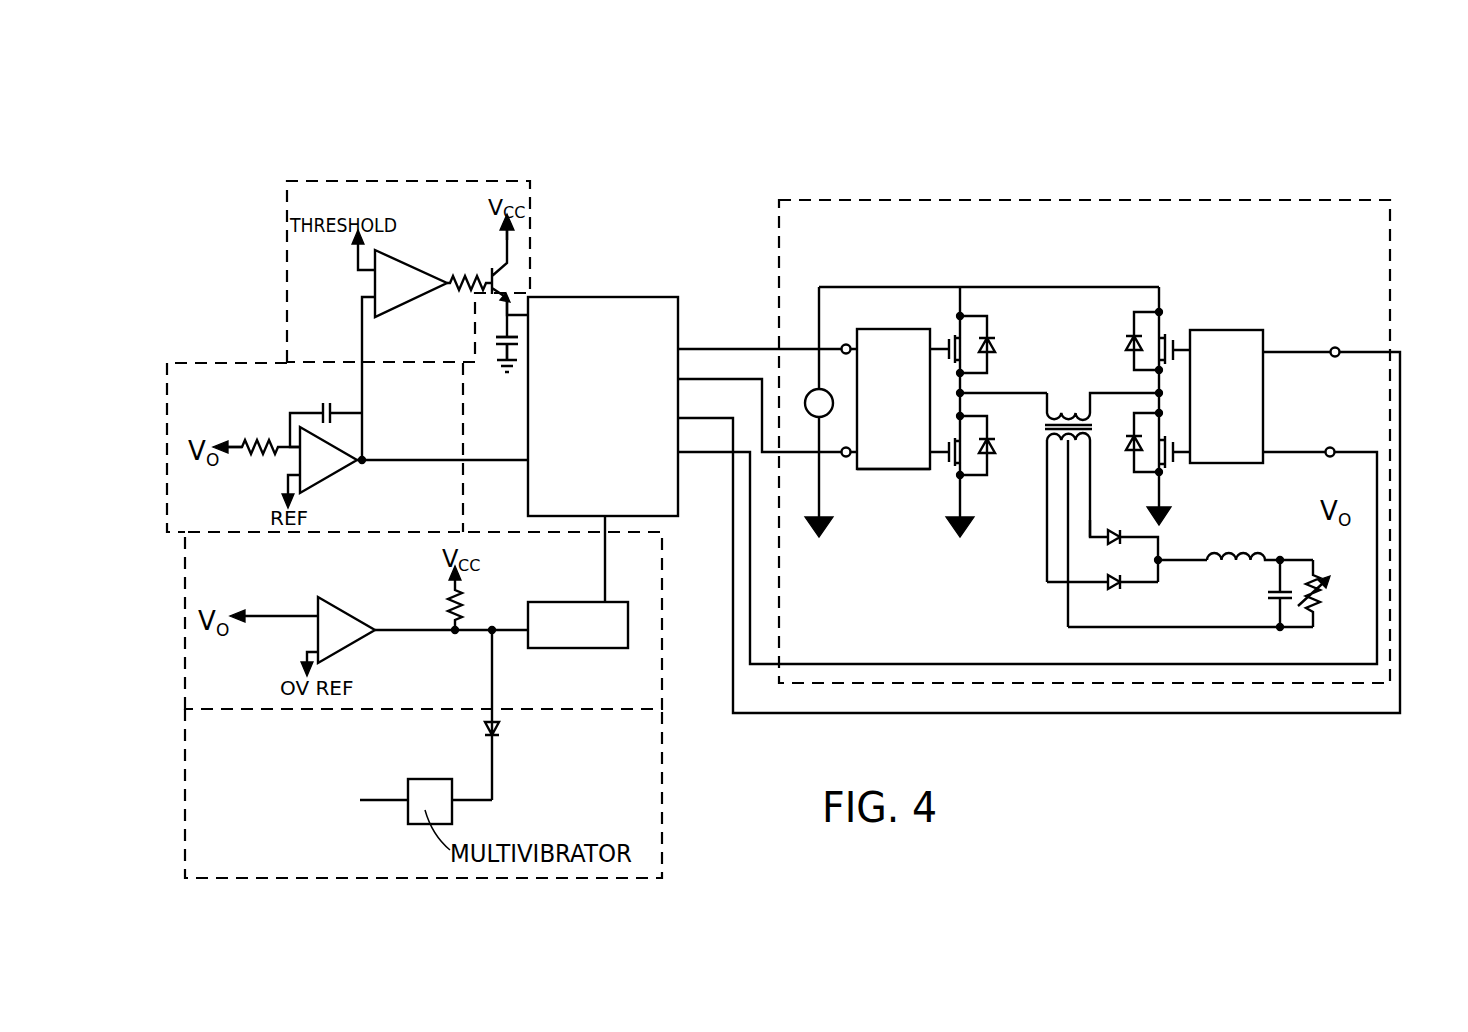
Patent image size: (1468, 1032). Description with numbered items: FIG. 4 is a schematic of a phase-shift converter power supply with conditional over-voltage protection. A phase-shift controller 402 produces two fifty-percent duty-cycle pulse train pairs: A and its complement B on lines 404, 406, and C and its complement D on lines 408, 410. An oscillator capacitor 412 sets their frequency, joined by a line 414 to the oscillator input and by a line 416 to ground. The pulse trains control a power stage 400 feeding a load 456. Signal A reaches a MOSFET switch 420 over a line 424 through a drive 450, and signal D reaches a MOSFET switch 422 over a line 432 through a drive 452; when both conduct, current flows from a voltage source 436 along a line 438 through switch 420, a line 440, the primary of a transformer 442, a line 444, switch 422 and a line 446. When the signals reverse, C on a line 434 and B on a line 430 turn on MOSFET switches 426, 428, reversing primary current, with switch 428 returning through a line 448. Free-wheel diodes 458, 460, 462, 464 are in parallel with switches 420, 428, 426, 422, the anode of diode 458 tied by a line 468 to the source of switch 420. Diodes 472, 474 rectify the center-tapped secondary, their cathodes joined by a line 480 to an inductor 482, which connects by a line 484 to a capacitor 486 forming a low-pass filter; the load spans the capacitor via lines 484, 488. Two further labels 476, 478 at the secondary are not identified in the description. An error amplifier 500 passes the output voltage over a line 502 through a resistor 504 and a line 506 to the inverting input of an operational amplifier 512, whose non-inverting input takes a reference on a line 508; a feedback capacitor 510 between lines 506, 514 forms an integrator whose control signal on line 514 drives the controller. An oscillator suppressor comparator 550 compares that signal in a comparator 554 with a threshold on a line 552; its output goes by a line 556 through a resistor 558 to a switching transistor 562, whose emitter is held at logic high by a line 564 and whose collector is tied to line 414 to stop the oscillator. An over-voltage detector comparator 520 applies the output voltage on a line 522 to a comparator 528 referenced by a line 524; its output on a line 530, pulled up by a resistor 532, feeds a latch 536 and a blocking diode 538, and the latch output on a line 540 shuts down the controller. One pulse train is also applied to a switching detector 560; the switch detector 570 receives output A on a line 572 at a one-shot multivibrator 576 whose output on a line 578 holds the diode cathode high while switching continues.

The power stage 400 is at (1400, 305).
The phase-shift controller 402 is at (612, 297).
The line 404 is at (767, 335).
The line 406 is at (767, 402).
The line 408 is at (1039, 532).
The line 410 is at (1027, 545).
The oscillator capacitor 412 is at (497, 337).
The line 414 is at (520, 345).
The line 416 is at (500, 366).
The MOSFET switch 420 is at (942, 345).
The MOSFET switch 422 is at (1164, 464).
The line 424 is at (846, 344).
The MOSFET switch 426 is at (1172, 340).
The MOSFET switch 428 is at (953, 464).
The line 430 is at (847, 458).
The line 432 is at (1330, 446).
The line 434 is at (1334, 346).
The voltage source 436 is at (808, 394).
The line 438 is at (888, 287).
The line 440 is at (1010, 395).
The transformer 442 is at (1068, 413).
The line 444 is at (1110, 418).
The line 446 is at (1163, 518).
The line 448 is at (954, 522).
The drive 450 is at (878, 470).
The drive 452 is at (1232, 330).
The load 456 is at (1340, 566).
The free-wheel diode 458 is at (990, 342).
The free-wheel diode 460 is at (988, 458).
The free-wheel diode 462 is at (1130, 344).
The free-wheel diode 464 is at (1130, 452).
The line 468 is at (964, 314).
The diode 472 is at (1114, 542).
The diode 474 is at (1112, 578).
The secondary winding tap 476 is at (1092, 524).
The transformer secondary winding 478 is at (1046, 566).
The line 480 is at (1180, 562).
The inductor 482 is at (1236, 554).
The line 484 is at (1296, 558).
The capacitor 486 is at (1268, 596).
The line 488 is at (1140, 627).
The error amplifier 500 is at (200, 363).
The line 502 is at (218, 446).
The resistor 504 is at (268, 440).
The line 506 is at (296, 450).
The line 508 is at (285, 490).
The feedback capacitor 510 is at (340, 410).
The operational amplifier comparator 512 is at (312, 440).
The line 514 is at (400, 460).
The over-voltage detector comparator 520 is at (662, 612).
The line 522 is at (262, 614).
The line 524 is at (305, 658).
The comparator 528 is at (346, 600).
The line 530 is at (416, 633).
The pull-up resistor 532 is at (452, 606).
The latch 536 is at (598, 602).
The blocking diode 538 is at (496, 730).
The line 540 is at (606, 588).
The oscillator suppressor comparator 550 is at (530, 196).
The line 552 is at (356, 268).
The comparator 554 is at (386, 254).
The line 556 is at (445, 290).
The resistor 558 is at (462, 280).
The switching detector 560 is at (490, 280).
The switching transistor 562 is at (508, 288).
The line 564 is at (510, 248).
The switch detector 570 is at (662, 800).
The line 572 is at (378, 798).
The one-shot multivibrator 576 is at (415, 779).
The line 578 is at (493, 785).